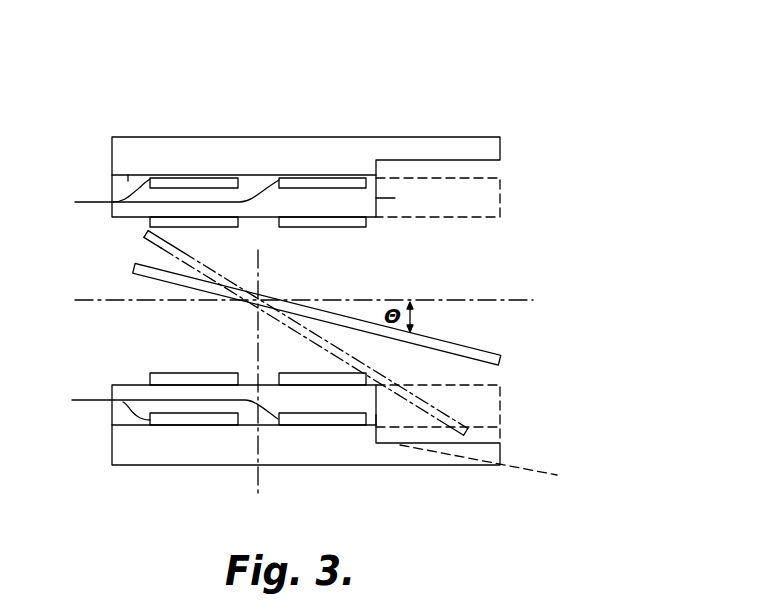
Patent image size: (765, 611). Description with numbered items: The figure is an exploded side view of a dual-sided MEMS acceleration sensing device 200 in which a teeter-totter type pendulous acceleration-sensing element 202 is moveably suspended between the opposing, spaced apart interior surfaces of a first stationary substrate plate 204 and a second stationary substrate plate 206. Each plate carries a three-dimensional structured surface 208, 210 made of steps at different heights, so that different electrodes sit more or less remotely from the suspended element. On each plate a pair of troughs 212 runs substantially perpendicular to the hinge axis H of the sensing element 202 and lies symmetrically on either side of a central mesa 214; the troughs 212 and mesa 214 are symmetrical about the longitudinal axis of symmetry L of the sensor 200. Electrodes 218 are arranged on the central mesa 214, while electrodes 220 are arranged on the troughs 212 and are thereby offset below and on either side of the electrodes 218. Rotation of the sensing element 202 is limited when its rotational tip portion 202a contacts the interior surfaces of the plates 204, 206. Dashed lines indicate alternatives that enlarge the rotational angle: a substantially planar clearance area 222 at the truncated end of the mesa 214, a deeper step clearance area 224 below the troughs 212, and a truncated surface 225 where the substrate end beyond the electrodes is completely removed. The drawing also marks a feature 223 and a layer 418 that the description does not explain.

The dual-sided MEMS acceleration sensing device 200 is at (528, 84).
The pendulous acceleration-sensing element 202 is at (435, 338).
The rotational tip portion 202a is at (498, 360).
The first stationary substrate plate 204 is at (112, 466).
The second stationary substrate plate 206 is at (120, 137).
The three-dimensional structured surface 208 is at (126, 368).
The three-dimensional structured surface 210 is at (116, 232).
The troughs 212 is at (128, 181).
The central mesa 214 is at (395, 198).
The electrodes 218 is at (224, 228).
The electrodes 220 is at (158, 299).
The clearance area 222 is at (503, 413).
The element (Fig. 6, 9) 223 is at (543, 466).
The clearance area 224 is at (488, 438).
The truncated surface 225 is at (382, 455).
The conductive layer 418 is at (377, 169).
The hinge axis H is at (262, 299).
The longitudinal axis of symmetry L is at (518, 300).